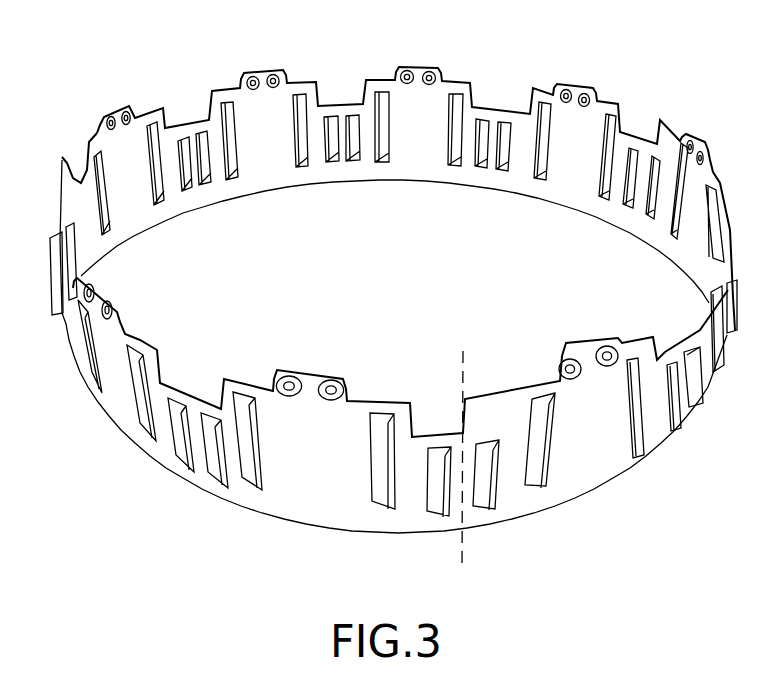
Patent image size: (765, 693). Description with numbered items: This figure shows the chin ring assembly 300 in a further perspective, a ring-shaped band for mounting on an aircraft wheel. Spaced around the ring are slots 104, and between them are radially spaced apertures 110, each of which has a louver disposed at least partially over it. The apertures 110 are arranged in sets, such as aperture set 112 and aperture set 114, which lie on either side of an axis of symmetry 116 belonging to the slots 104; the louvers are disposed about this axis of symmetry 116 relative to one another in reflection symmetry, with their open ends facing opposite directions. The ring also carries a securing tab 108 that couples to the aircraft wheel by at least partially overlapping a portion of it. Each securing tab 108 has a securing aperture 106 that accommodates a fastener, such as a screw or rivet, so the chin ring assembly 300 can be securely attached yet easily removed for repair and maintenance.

The chin ring assembly 300 is at (89, 97).
The slot 104 is at (181, 393).
The securing aperture 106 is at (288, 380).
The securing tab 108 is at (347, 378).
The aperture 110 is at (637, 440).
The aperture set 112 is at (441, 537).
The aperture set 114 is at (546, 537).
The axis of symmetry 116 is at (470, 347).